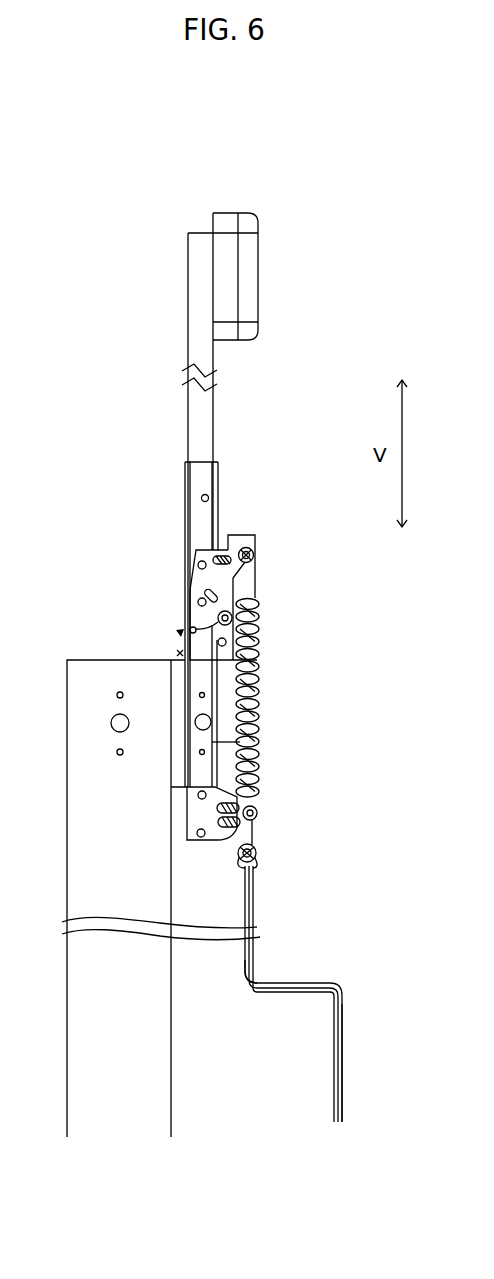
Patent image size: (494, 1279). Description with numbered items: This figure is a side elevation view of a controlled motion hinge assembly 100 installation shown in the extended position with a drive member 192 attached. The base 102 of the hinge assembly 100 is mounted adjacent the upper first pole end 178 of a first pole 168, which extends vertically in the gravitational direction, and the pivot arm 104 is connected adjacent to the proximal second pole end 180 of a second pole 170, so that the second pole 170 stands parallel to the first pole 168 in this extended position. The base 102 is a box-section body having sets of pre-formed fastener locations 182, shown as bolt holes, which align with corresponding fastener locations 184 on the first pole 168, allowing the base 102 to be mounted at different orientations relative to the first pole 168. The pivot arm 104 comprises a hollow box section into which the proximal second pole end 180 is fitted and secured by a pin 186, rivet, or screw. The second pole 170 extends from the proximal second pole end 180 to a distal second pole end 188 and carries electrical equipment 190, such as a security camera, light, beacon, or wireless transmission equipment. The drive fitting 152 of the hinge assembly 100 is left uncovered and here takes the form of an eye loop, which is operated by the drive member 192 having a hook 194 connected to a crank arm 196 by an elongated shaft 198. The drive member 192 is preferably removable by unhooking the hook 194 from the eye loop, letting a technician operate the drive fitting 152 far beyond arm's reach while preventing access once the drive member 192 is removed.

The hinge assembly 100 is at (278, 688).
The base 102 is at (259, 732).
The pivot arm 104 is at (188, 515).
The drive fitting 152 is at (263, 838).
The first pole 168 is at (84, 860).
The second pole 170 is at (184, 348).
The upper first pole end 178 is at (122, 656).
The proximal second pole end 180 is at (197, 452).
The pre-formed fastener locations 182 is at (195, 714).
The fastener locations 184 is at (109, 716).
The pin 186 is at (209, 498).
The distal second pole end 188 is at (188, 255).
The electrical equipment 190 is at (252, 222).
The drive member 192 is at (299, 942).
The hook 194 is at (268, 856).
The crank arm 196 is at (345, 1007).
The elongated shaft 198 is at (236, 960).